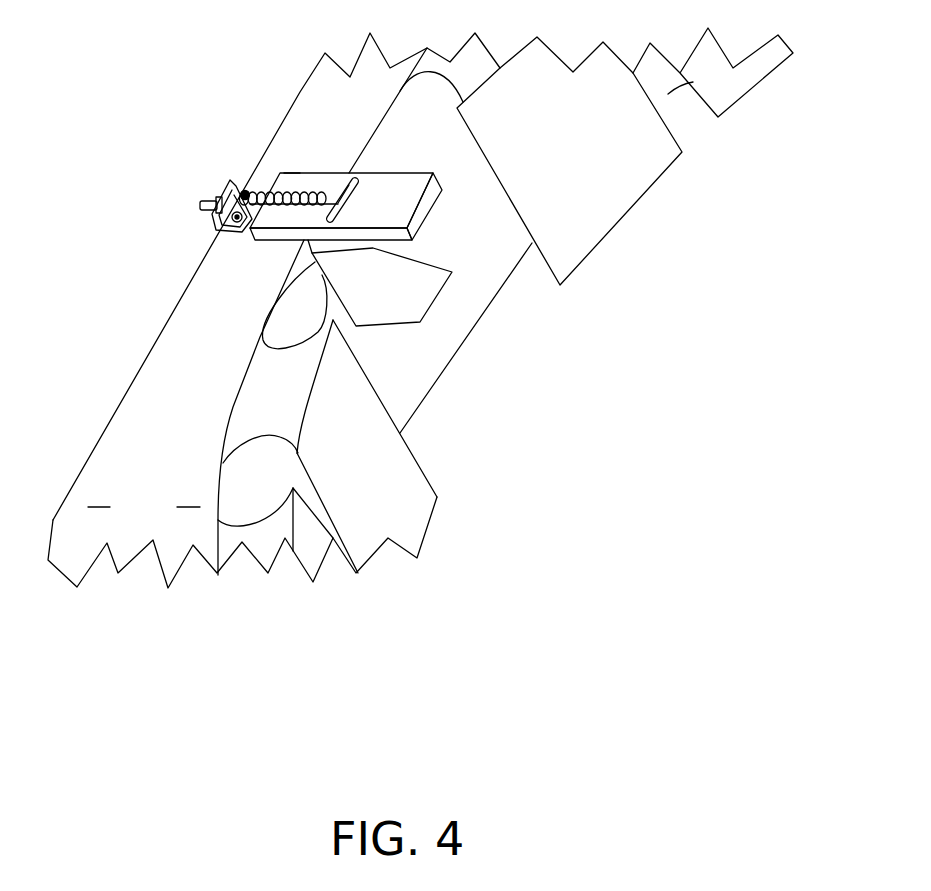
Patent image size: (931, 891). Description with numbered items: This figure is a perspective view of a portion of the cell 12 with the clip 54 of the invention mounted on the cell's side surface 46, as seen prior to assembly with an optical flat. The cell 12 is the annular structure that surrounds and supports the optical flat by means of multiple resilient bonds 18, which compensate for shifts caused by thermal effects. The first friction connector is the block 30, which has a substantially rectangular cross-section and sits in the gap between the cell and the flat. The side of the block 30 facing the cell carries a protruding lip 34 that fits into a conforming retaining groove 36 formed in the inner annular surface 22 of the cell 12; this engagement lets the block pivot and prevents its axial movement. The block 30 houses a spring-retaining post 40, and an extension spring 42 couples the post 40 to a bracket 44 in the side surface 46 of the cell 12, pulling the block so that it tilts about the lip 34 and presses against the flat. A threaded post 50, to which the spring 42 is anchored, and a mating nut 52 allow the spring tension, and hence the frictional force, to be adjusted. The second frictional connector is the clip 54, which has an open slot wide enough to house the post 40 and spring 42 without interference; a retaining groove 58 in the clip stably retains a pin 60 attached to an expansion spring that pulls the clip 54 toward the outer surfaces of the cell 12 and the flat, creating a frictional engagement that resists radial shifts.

The cell 12 is at (109, 409).
The resilient bonds 18 is at (582, 212).
The inner annular surface 22 is at (408, 360).
The block 30 is at (462, 293).
The protruding lip 34 is at (312, 255).
The retaining groove 36 is at (322, 275).
The spring-retaining post 40 is at (327, 182).
The extension spring 42 is at (283, 208).
The bracket 44 is at (245, 192).
The side surface 46 is at (144, 506).
The threaded post 50 is at (200, 207).
The mating nut 52 is at (220, 193).
The clip 54 is at (291, 161).
The retaining groove 58 is at (357, 168).
The pin 60 is at (350, 206).